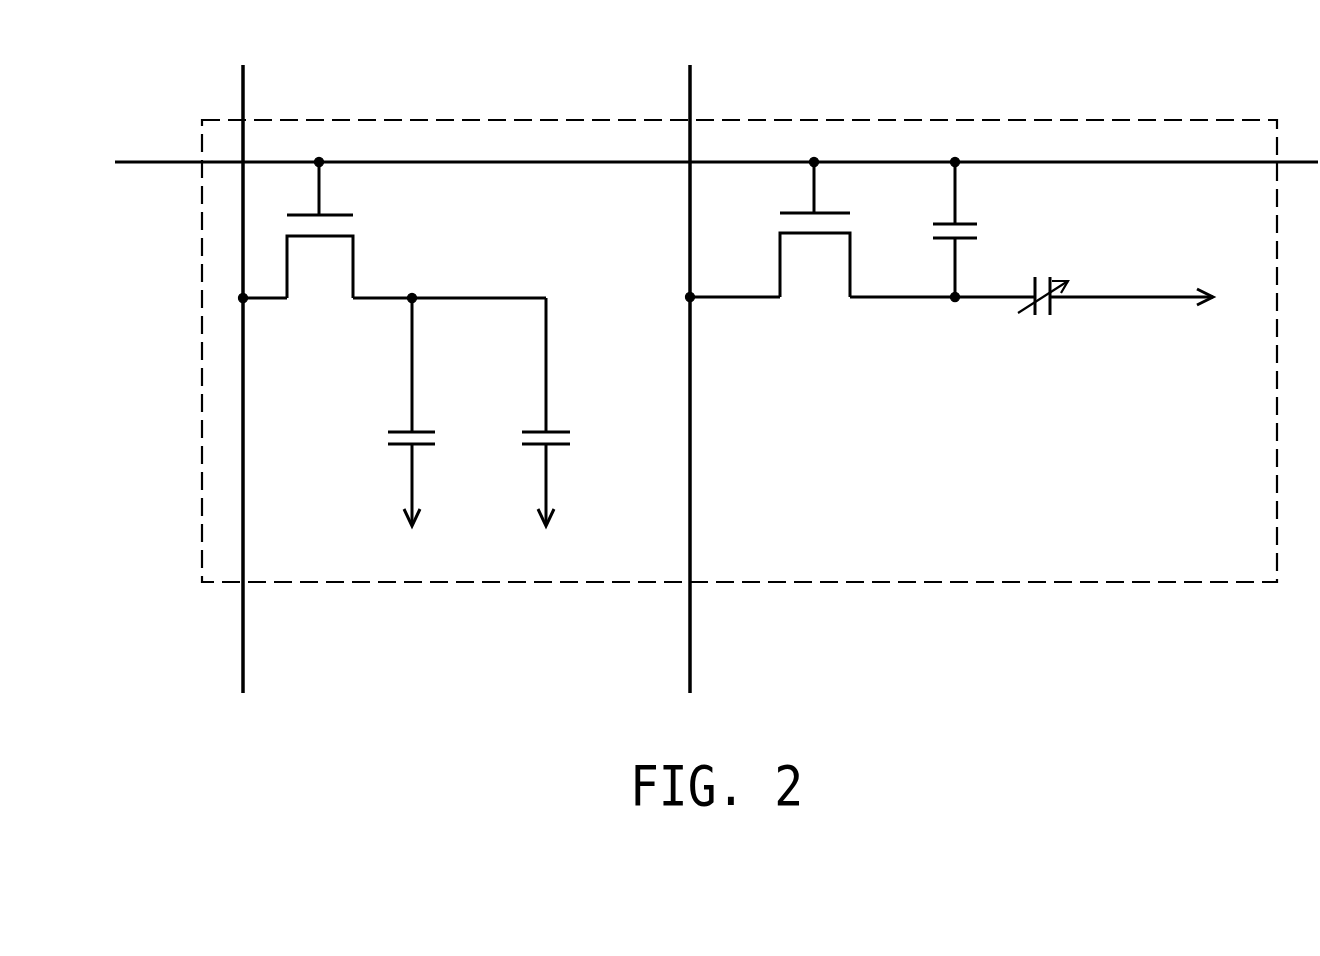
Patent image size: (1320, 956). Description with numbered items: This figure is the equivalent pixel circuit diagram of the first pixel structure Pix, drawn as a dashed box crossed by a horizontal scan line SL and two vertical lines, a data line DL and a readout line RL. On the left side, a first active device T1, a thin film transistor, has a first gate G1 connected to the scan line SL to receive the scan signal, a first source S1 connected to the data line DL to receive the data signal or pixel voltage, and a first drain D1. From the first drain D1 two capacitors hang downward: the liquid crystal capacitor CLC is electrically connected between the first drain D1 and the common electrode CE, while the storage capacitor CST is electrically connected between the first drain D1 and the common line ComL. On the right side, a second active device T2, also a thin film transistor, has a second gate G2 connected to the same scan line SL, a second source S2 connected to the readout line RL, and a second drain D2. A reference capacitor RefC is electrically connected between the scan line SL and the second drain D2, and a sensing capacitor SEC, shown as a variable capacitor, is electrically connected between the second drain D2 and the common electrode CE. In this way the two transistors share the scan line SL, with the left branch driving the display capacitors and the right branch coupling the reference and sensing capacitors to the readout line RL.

The first pixel structure Pix is at (450, 120).
The scan line SL is at (902, 160).
The data line DL is at (246, 640).
The readout line RL is at (694, 640).
The first active device T1 is at (320, 249).
The first gate G1 is at (319, 193).
The first source S1 is at (271, 300).
The first drain D1 is at (371, 300).
The liquid crystal capacitor CLC is at (441, 412).
The storage capacitor CST is at (575, 412).
The common electrode CE is at (822, 426).
The common line ComL is at (544, 552).
The second active device T2 is at (811, 262).
The second gate G2 is at (814, 195).
The second source S2 is at (741, 300).
The second drain D2 is at (890, 300).
The reference capacitor RefC is at (980, 233).
The sensing capacitor SEC is at (1060, 307).